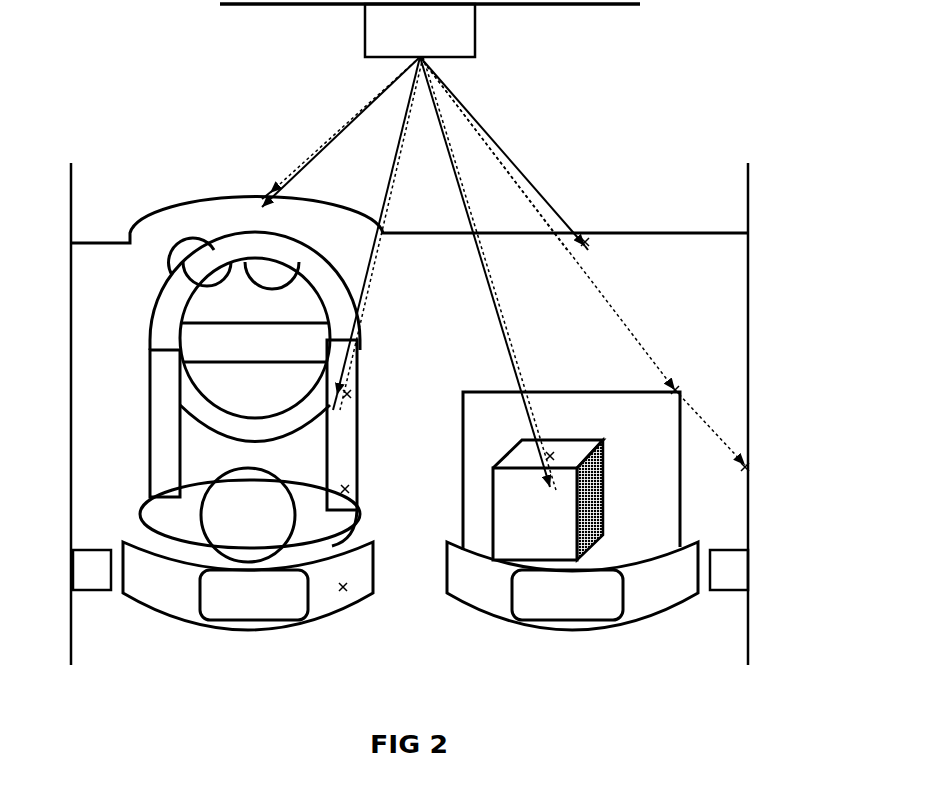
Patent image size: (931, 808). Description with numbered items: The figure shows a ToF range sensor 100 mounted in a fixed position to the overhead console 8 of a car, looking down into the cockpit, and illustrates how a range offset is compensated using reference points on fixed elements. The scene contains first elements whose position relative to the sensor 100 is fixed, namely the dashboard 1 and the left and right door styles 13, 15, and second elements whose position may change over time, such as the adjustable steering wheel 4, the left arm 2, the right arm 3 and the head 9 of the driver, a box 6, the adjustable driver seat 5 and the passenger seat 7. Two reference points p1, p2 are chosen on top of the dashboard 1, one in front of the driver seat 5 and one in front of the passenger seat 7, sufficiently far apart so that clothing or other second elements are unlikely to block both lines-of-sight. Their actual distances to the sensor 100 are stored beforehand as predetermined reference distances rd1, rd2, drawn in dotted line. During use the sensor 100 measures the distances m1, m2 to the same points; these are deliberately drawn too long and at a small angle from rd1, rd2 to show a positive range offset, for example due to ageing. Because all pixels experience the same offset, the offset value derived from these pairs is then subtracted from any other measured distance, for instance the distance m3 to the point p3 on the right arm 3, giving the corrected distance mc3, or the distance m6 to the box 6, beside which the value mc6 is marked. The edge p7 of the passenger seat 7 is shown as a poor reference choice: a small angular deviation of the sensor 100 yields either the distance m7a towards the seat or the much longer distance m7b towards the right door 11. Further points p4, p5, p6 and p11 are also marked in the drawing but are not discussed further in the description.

The range sensor 100 is at (468, 45).
The overhead console 8 is at (594, 10).
The dashboard 1 is at (689, 231).
The adjustable steering wheel 4 is at (160, 315).
The left arm 2 is at (160, 470).
The right arm 3 is at (358, 445).
The head 9 is at (230, 520).
The driver seat 5 is at (170, 598).
The left door style 13 is at (82, 576).
The right door style 15 is at (740, 572).
The right door 11 is at (752, 522).
The box 6 is at (594, 522).
The passenger seat 7 is at (672, 522).
The first predetermined reference distance rd1 is at (298, 165).
The first measured distance m1 is at (372, 125).
The first reference point p1 is at (268, 190).
The second predetermined reference distance rd2 is at (510, 158).
The second measured distance m2 is at (500, 150).
The second reference point p2 is at (590, 232).
The measured distance to point p3 m3 is at (365, 263).
The corrected distance mc3 is at (362, 309).
The point on the right arm p3 is at (353, 394).
The fourth measurement point p4 is at (352, 490).
The fifth measurement point p5 is at (345, 593).
The other measured distance value m6 is at (506, 344).
The sixth calibration ray mc6 is at (545, 303).
The sixth measurement point p6 is at (556, 456).
The measured distance towards the seat m7a is at (645, 352).
The measured distance towards the right door m7b is at (625, 322).
The edge of the passenger seat p7 is at (681, 388).
The eleventh measurement point p11 is at (750, 462).